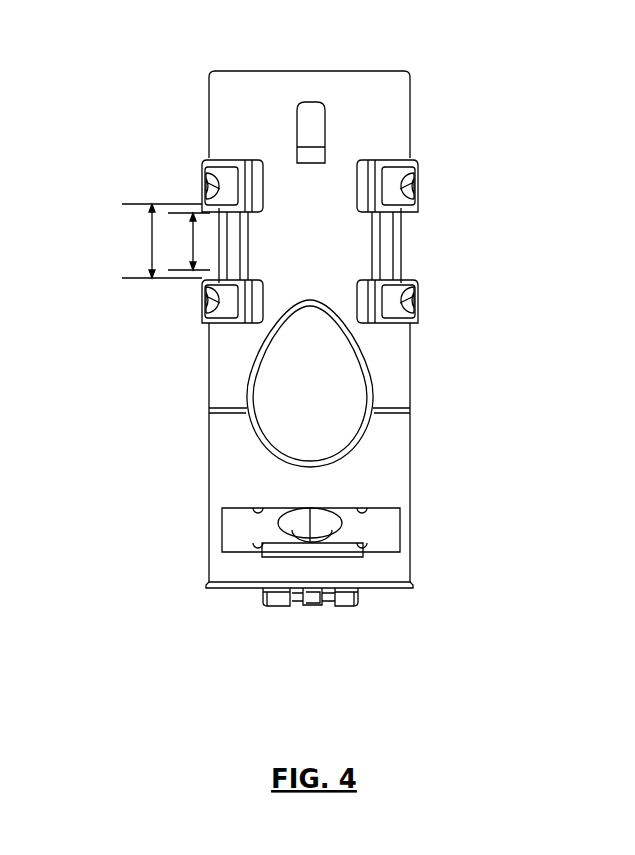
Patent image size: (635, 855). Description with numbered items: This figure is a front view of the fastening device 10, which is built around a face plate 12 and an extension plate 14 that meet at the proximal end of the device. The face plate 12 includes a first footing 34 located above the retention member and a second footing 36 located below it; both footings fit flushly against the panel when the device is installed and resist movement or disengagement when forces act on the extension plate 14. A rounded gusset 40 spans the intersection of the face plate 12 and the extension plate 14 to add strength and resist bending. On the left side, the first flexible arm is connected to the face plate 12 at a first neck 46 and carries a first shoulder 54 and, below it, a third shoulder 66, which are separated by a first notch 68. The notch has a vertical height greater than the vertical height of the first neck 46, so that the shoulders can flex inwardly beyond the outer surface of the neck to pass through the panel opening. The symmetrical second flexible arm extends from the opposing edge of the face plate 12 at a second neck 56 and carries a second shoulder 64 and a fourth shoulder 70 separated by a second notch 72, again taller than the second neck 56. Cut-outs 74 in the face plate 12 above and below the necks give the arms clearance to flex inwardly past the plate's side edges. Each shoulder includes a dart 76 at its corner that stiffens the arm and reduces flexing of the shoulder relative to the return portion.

The fastening device 10 is at (522, 166).
The face plate 12 is at (303, 205).
The extension plate 14 is at (383, 490).
The first footing 34 is at (377, 109).
The second footing 36 is at (238, 365).
The gusset 40 is at (310, 403).
The first neck 46 is at (238, 252).
The first shoulder 54 is at (203, 178).
The second neck 56 is at (380, 245).
The second shoulder 64 is at (419, 172).
The third shoulder 66 is at (227, 297).
The first notch 68 is at (128, 248).
The fourth shoulder 70 is at (393, 300).
The second notch 72 is at (428, 233).
The cut-outs 74 is at (203, 161).
The dart 76 is at (225, 183).